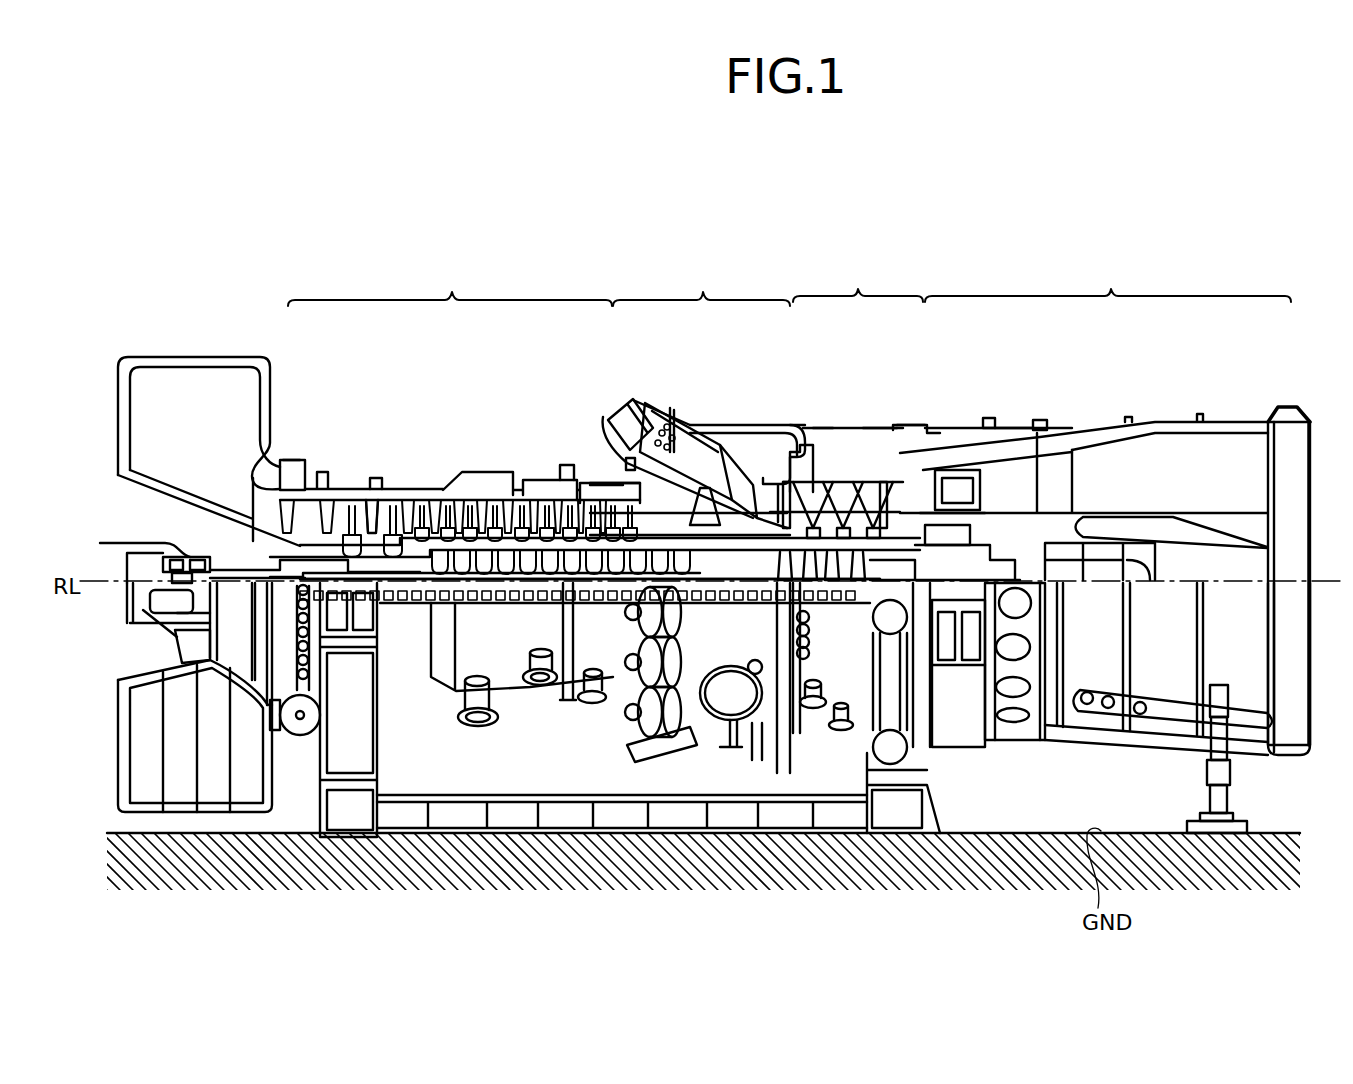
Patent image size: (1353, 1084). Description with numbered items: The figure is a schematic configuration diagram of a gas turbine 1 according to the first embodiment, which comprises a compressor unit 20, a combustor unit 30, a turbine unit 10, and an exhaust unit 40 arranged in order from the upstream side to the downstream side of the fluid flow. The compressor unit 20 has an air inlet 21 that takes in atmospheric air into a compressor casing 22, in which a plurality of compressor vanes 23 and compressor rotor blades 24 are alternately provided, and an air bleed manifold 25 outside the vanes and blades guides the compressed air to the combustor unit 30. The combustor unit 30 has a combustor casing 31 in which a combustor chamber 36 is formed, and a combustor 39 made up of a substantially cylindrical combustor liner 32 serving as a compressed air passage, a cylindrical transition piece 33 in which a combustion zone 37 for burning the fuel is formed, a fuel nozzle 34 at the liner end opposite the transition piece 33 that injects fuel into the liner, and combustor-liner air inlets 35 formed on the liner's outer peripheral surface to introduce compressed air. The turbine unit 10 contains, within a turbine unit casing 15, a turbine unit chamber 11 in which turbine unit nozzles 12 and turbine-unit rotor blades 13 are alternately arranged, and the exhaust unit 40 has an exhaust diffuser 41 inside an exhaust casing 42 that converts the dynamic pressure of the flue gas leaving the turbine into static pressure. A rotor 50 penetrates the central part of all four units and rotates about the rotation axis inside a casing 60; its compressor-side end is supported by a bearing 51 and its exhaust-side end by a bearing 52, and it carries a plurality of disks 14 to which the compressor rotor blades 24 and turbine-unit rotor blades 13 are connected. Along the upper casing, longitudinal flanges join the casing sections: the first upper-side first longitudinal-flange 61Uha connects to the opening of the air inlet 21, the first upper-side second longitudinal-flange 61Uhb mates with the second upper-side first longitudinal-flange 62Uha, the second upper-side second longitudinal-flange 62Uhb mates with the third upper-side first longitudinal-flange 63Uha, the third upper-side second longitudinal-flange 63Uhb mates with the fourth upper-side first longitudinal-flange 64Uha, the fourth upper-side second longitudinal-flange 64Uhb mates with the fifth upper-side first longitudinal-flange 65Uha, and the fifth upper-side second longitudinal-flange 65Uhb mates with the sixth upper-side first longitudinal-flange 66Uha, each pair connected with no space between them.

The gas turbine 1 is at (1247, 242).
The turbine unit 10 is at (858, 282).
The turbine unit chamber 11 is at (845, 480).
The turbine unit nozzle 12 is at (812, 485).
The turbine-unit rotor blade 13 is at (827, 500).
The disk 14 is at (437, 560).
The turbine unit casing 15 is at (878, 428).
The compressor unit 20 is at (450, 286).
The air inlet 21 is at (250, 491).
The compressor casing 22 is at (312, 470).
The compressor vane 23 is at (352, 490).
The compressor rotor blade 24 is at (378, 507).
The air bleed manifold 25 is at (483, 488).
The combustor unit 30 is at (701, 286).
The combustor casing 31 is at (748, 455).
The combustor liner 32 is at (688, 440).
The transition piece 33 is at (721, 470).
The fuel nozzle 34 is at (640, 412).
The combustor-liner air inlet 35 is at (665, 428).
The combustor chamber 36 is at (735, 428).
The combustion zone 37 is at (628, 458).
The combustor 39 is at (621, 412).
The exhaust unit 40 is at (1108, 282).
The exhaust diffuser 41 is at (1013, 460).
The exhaust casing 42 is at (945, 432).
The rotor 50 is at (677, 572).
The bearing 51 is at (172, 556).
The bearing 52 is at (963, 560).
The casing 60 is at (1147, 411).
The first upper-side first longitudinal-flange 61Uha is at (292, 458).
The first upper-side second longitudinal-flange 61Uhb is at (565, 465).
The second upper-side first longitudinal-flange 62Uha is at (585, 483).
The second upper-side second longitudinal-flange 62Uhb is at (805, 440).
The third upper-side first longitudinal-flange 63Uha is at (835, 430).
The third upper-side second longitudinal-flange 63Uhb is at (893, 428).
The fourth upper-side first longitudinal-flange 64Uha is at (897, 425).
The fourth upper-side second longitudinal-flange 64Uhb is at (987, 420).
The fifth upper-side first longitudinal-flange 65Uha is at (995, 425).
The fifth upper-side second longitudinal-flange 65Uhb is at (1043, 418).
The sixth upper-side first longitudinal-flange 66Uha is at (1047, 418).